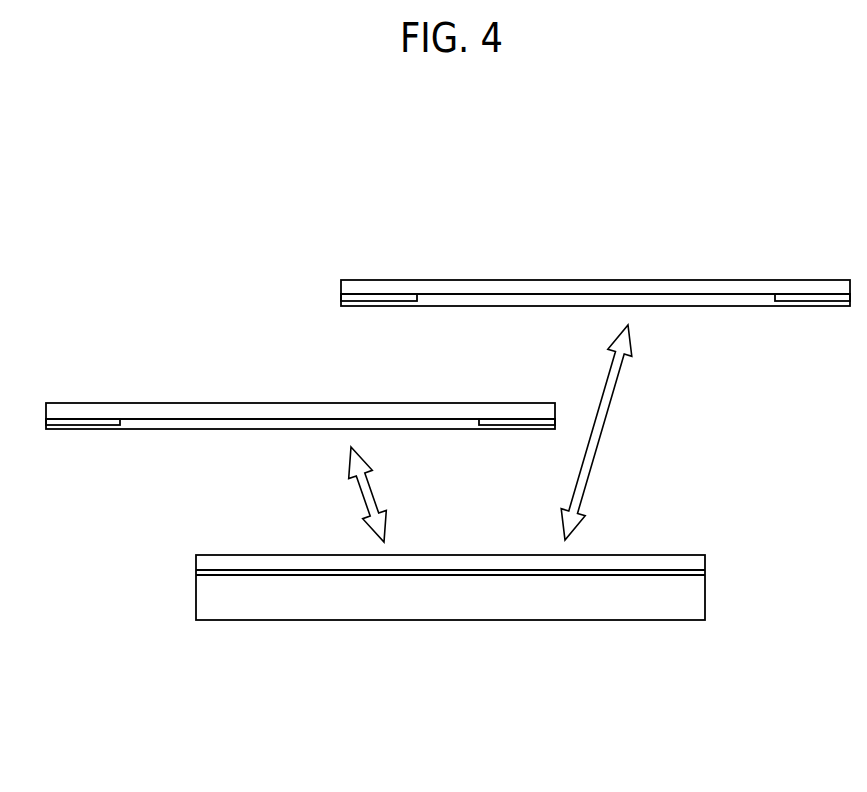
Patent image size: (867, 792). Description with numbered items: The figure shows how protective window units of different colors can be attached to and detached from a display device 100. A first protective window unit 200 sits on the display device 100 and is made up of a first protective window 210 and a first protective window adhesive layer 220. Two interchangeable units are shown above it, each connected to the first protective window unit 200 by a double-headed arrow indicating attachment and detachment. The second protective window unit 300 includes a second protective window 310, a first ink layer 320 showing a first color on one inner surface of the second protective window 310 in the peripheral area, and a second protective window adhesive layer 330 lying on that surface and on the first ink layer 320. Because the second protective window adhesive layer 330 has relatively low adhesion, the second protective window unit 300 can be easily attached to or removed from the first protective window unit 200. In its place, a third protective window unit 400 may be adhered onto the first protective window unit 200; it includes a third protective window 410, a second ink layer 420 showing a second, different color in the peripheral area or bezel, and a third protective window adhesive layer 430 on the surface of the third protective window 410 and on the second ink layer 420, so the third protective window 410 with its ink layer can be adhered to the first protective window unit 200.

The display device 100 is at (700, 600).
The first protective window unit 200 is at (450, 642).
The first protective window 210 is at (533, 562).
The first protective window adhesive layer 220 is at (600, 572).
The second protective window unit 300 is at (300, 361).
The second protective window 310 is at (355, 405).
The first ink layer 320 is at (88, 421).
The second protective window adhesive layer 330 is at (434, 422).
The third protective window unit 400 is at (595, 248).
The third protective window 410 is at (651, 280).
The second ink layer 420 is at (383, 298).
The third protective window adhesive layer 430 is at (730, 298).